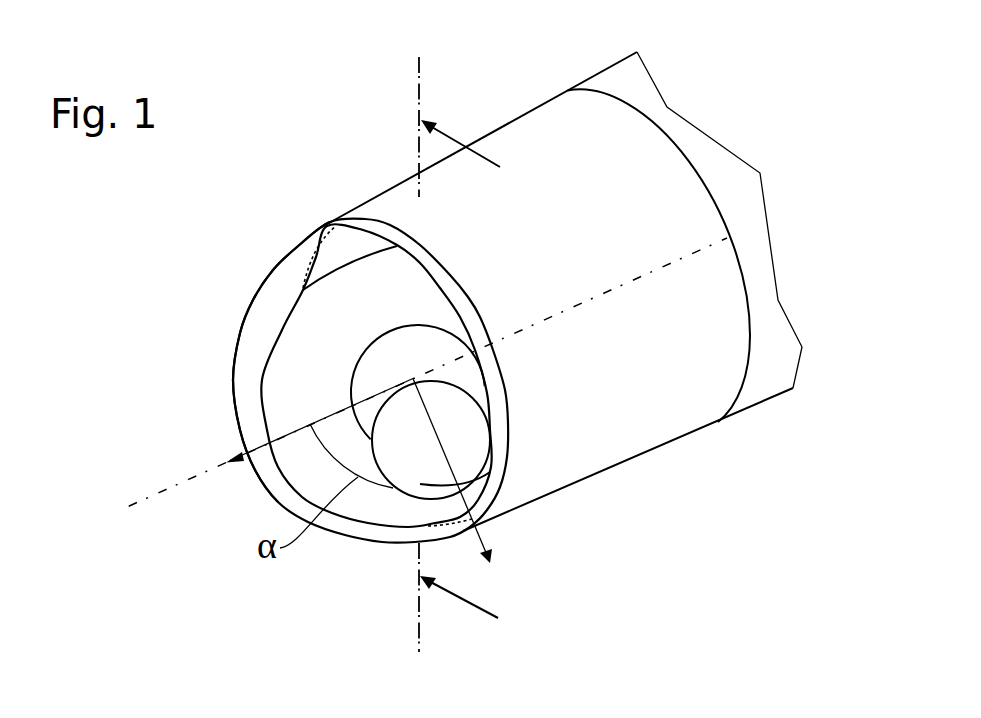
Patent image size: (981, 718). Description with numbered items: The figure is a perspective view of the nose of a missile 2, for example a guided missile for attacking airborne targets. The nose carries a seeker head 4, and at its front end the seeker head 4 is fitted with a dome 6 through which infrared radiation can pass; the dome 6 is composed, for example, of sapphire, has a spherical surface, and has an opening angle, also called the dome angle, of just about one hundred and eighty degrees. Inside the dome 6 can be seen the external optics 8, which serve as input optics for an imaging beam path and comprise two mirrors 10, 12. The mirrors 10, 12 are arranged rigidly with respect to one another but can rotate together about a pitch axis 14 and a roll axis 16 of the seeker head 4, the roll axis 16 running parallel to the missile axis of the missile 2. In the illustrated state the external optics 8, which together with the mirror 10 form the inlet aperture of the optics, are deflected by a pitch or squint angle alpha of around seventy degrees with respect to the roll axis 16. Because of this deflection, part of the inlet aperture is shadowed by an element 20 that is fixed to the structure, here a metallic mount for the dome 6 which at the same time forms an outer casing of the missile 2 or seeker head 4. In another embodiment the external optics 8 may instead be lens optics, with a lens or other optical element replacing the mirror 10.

The missile 2 is at (763, 392).
The seeker head 4 is at (572, 477).
The dome 6 is at (243, 315).
The external optics 8 is at (236, 442).
The mirror 10 is at (270, 388).
The mirror 12 is at (483, 420).
The pitch axis 14 is at (419, 622).
The roll axis 16 is at (578, 300).
The element fixed to the structure 20 is at (380, 202).